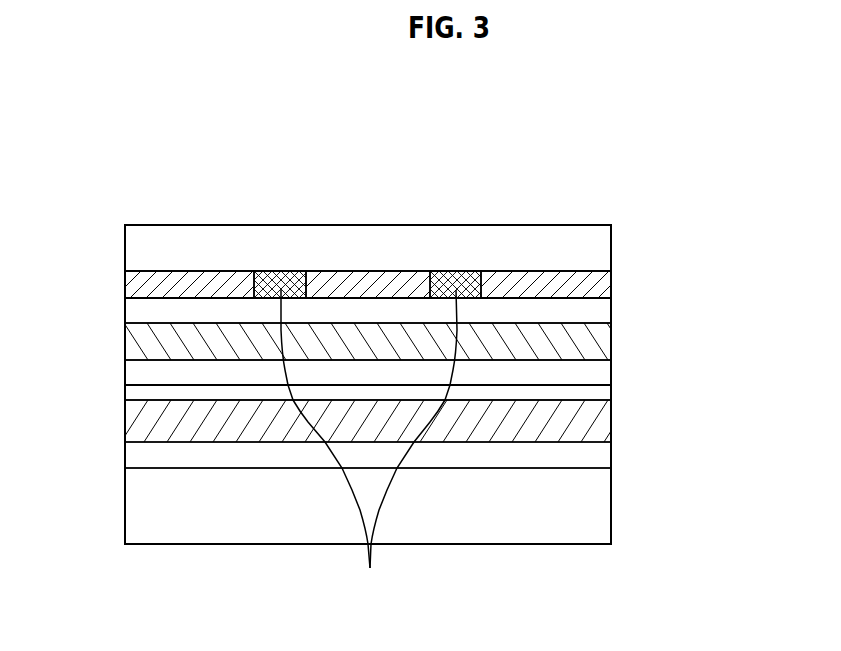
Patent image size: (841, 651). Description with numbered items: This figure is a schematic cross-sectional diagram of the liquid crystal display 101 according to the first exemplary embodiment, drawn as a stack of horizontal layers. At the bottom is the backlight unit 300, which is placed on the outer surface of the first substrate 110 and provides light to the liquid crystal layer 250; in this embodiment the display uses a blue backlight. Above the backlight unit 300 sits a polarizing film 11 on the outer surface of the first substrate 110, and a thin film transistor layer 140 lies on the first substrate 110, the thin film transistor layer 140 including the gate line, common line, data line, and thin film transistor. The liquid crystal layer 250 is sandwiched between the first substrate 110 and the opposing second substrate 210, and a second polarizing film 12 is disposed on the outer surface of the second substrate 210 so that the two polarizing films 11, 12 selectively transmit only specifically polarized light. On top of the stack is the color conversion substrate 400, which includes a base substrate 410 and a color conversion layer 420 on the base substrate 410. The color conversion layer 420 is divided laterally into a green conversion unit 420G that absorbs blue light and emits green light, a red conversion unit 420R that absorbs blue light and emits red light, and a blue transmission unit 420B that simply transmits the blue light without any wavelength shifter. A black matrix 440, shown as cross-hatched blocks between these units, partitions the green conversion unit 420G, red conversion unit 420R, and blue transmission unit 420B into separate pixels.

The liquid crystal display 101 is at (176, 103).
The color conversion substrate 400 is at (712, 240).
The base substrate 410 is at (590, 246).
The color conversion layer 420 is at (542, 157).
The green conversion unit 420G is at (202, 283).
The red conversion unit 420R is at (368, 284).
The blue transmission unit 420B is at (532, 283).
The black matrix 440 is at (364, 434).
The polarizing film 12 is at (590, 315).
The second substrate 210 is at (590, 342).
The liquid crystal layer 250 is at (590, 373).
The thin film transistor layer 140 is at (590, 395).
The first substrate 110 is at (590, 420).
The polarizing film 11 is at (590, 455).
The backlight unit 300 is at (590, 512).